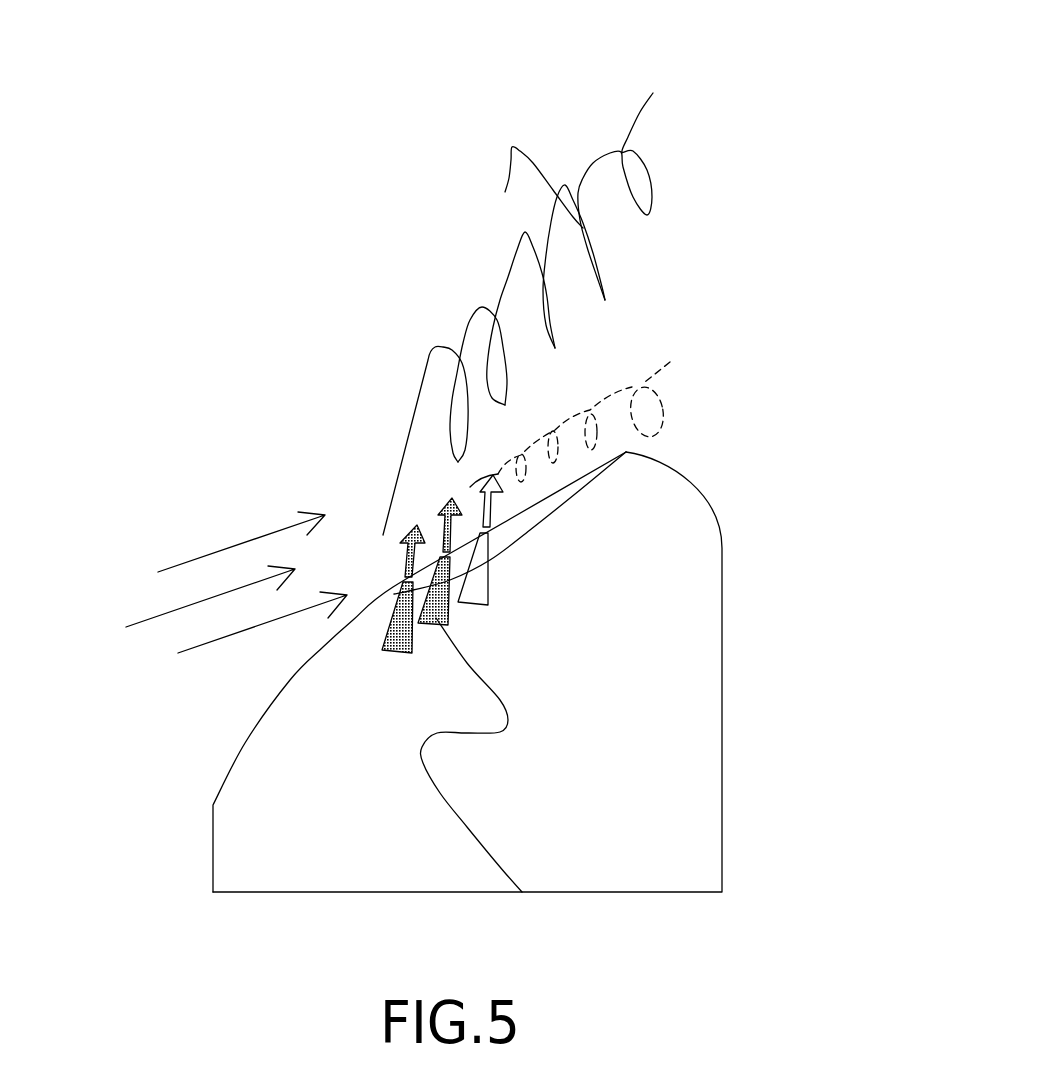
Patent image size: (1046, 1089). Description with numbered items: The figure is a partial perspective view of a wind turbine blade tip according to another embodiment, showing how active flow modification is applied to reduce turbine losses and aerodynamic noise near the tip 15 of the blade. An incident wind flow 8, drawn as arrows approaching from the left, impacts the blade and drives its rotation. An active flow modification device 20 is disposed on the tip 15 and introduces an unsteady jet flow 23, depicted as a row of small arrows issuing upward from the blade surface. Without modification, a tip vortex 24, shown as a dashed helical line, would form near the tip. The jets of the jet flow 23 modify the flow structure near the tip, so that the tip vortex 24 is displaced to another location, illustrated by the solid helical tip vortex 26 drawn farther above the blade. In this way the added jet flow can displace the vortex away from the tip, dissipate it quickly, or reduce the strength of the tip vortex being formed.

The wind flow 8 is at (182, 608).
The tip 15 is at (772, 854).
The active flow modification device 20 is at (522, 892).
The unsteady jet flow 23 is at (442, 547).
The tip vortex 24 is at (593, 431).
The tip vortex 26 is at (505, 192).